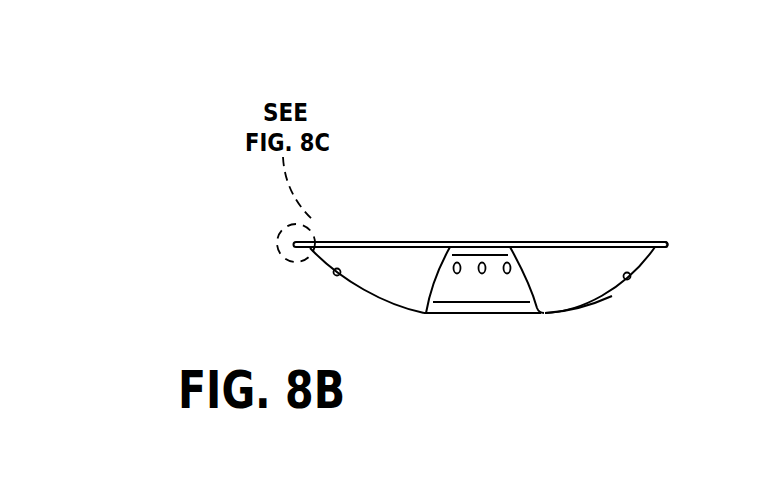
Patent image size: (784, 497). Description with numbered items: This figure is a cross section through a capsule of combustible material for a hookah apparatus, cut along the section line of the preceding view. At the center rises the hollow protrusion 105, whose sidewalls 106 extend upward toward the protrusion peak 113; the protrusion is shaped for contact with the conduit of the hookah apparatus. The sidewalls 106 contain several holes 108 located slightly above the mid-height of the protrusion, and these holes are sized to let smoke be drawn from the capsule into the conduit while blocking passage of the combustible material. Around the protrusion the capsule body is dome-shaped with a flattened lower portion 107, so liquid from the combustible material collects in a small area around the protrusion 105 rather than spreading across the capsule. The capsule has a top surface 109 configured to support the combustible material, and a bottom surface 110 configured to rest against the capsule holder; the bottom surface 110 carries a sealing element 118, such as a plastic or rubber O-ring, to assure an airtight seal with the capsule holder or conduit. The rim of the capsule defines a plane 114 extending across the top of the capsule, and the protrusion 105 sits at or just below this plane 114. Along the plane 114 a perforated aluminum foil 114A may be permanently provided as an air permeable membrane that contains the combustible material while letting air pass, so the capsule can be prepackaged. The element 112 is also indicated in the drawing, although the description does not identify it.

The protrusion 105 is at (547, 262).
The sidewalls 106 is at (452, 276).
The flattened lower portion 107 is at (547, 315).
The holes 108 is at (483, 262).
The top surface 109 is at (654, 216).
The bottom surface 110 is at (632, 310).
The container 112 is at (783, 424).
The protrusion peak 113 is at (511, 246).
The plane 114 is at (345, 220).
The perforated aluminum foil 114A is at (400, 241).
The sealing element 118 is at (631, 277).